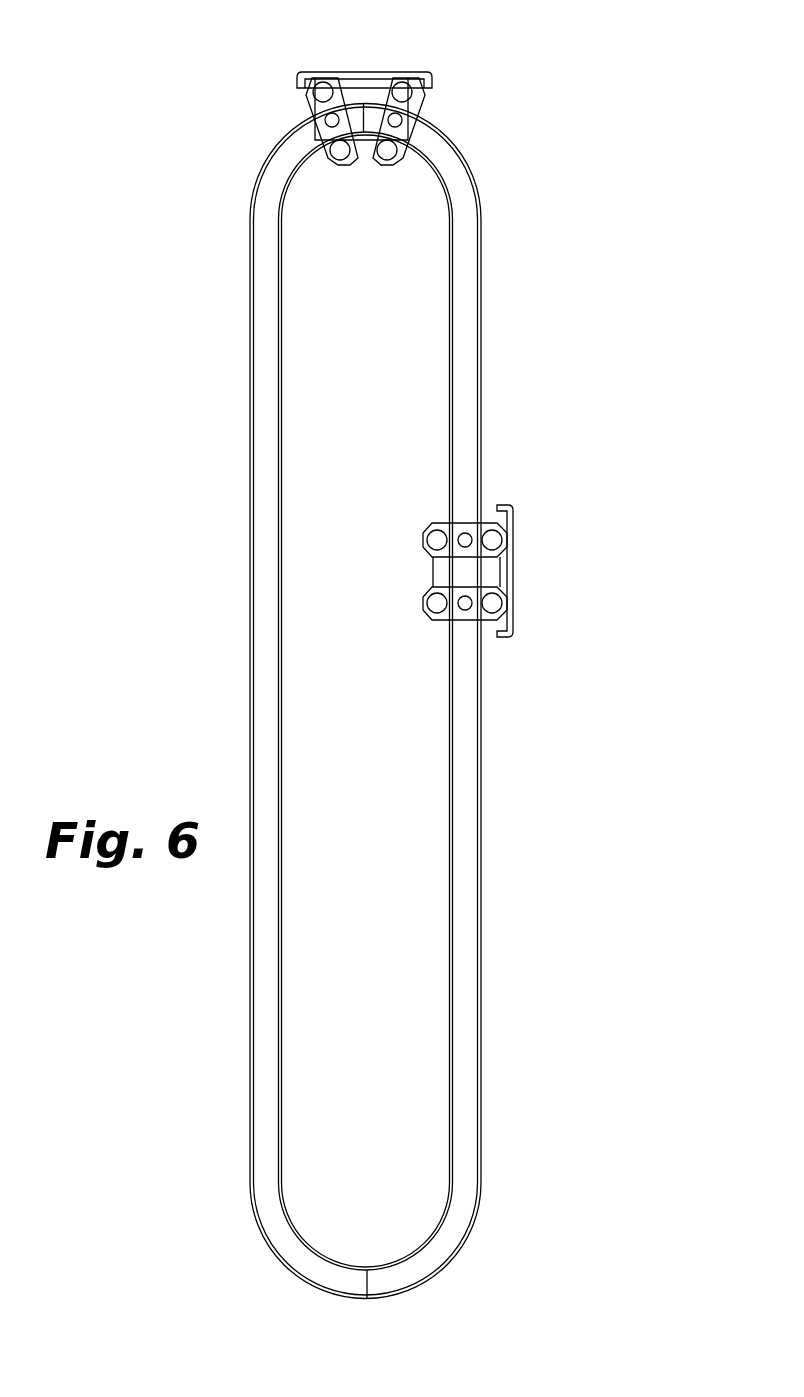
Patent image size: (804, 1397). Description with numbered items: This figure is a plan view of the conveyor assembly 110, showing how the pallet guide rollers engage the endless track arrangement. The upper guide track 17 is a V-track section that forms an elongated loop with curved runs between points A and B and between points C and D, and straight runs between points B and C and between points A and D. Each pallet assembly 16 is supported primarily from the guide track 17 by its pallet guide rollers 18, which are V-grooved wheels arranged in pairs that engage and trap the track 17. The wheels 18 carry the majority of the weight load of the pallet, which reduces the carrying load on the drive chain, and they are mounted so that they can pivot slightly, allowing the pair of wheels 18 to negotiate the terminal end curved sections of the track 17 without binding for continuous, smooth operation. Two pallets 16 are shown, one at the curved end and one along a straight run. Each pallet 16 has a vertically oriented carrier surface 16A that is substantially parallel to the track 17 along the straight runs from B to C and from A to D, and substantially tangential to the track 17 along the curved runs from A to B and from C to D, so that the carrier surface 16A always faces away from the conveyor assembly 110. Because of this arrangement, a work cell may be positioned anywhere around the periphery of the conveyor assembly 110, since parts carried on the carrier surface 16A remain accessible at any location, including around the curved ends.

The conveyor assembly 110 is at (157, 385).
The upper guide track 17 is at (482, 857).
The pallet assembly 16 is at (360, 72).
The carrier surface 16A is at (393, 72).
The pallet guide rollers 18 is at (417, 97).
The point A is at (278, 217).
The point B is at (449, 215).
The point C is at (453, 1183).
The point D is at (283, 1183).